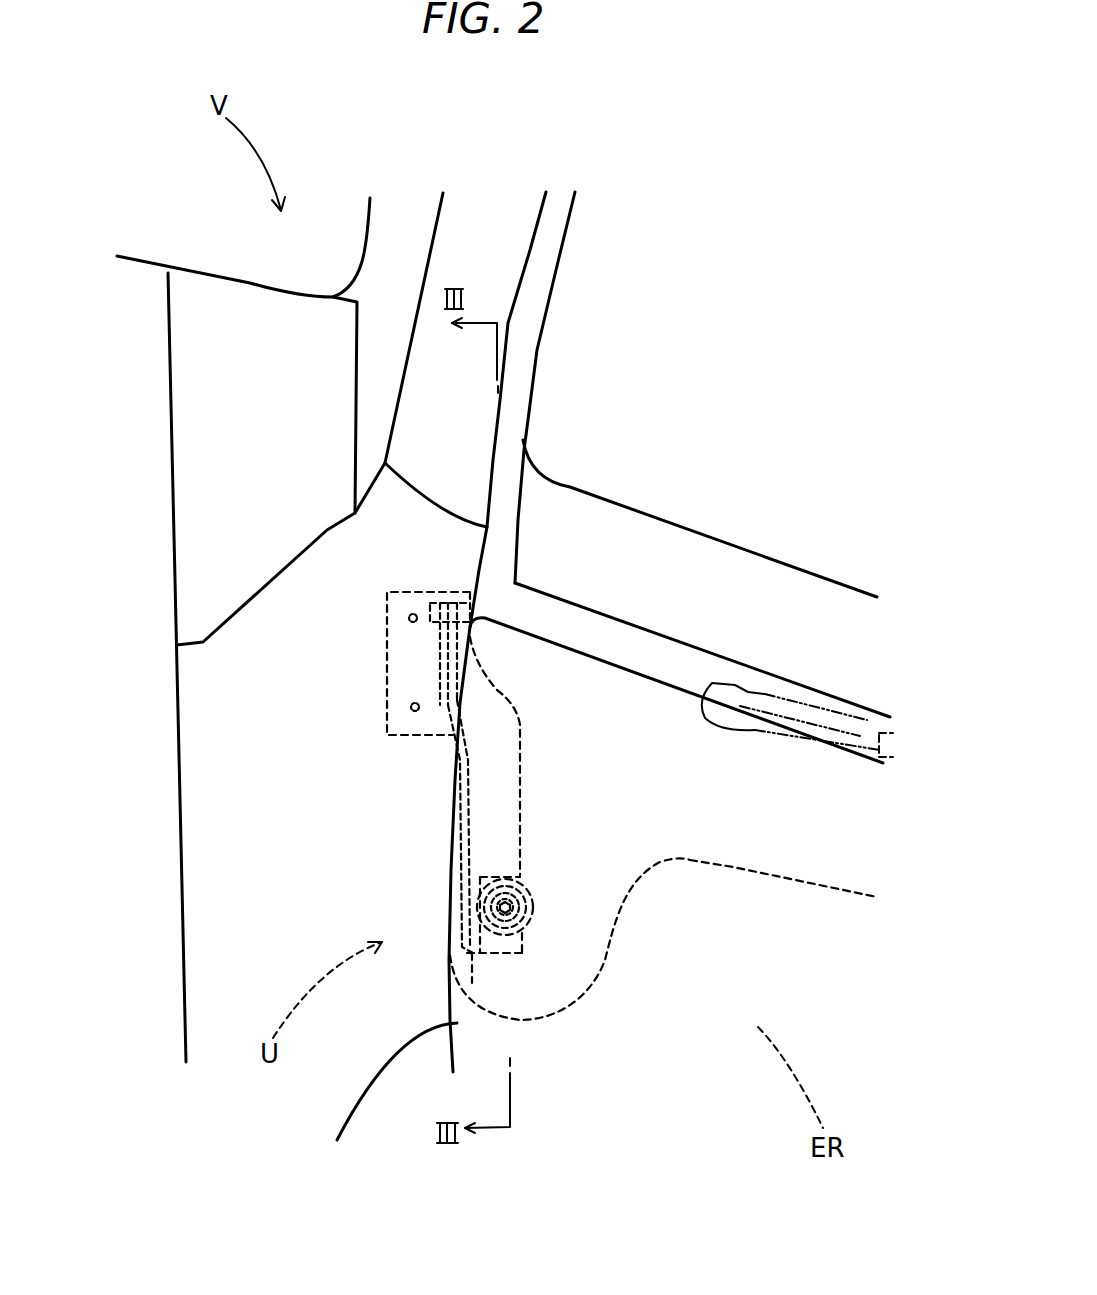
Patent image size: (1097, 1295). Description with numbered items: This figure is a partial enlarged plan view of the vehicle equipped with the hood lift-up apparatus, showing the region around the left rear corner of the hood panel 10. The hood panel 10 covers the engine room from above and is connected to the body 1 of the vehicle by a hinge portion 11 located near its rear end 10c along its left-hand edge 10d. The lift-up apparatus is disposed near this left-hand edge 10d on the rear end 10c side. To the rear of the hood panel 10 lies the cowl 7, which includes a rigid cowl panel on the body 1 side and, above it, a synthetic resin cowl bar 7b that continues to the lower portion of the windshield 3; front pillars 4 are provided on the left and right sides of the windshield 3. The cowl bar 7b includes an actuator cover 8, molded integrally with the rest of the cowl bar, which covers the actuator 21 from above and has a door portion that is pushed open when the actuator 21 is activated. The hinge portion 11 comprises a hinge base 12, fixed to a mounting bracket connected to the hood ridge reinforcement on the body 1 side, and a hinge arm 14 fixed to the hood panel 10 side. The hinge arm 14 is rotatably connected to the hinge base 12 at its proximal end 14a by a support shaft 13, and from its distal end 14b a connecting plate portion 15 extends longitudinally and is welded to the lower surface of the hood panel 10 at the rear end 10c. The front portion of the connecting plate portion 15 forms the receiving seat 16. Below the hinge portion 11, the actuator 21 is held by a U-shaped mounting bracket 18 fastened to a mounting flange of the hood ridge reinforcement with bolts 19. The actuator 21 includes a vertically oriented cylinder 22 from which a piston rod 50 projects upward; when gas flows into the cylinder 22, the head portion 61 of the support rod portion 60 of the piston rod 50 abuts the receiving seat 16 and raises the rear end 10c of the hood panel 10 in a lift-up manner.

The body 1 is at (207, 715).
The windshield 3 is at (685, 240).
The front pillar 4 is at (498, 220).
The cowl 7 is at (785, 936).
The cowl bar 7b is at (828, 870).
The actuator cover 8 is at (590, 968).
The hood panel 10 is at (792, 763).
The rear end 10c is at (853, 763).
The left-hand edge 10d is at (385, 1098).
The hinge portion 11 is at (525, 690).
The hinge base 12 is at (380, 597).
The support shaft 13 is at (470, 613).
The hinge arm 14 is at (513, 742).
The proximal end 14a is at (460, 590).
The distal end 14b is at (520, 793).
The connecting plate portion 15 is at (579, 1037).
The receiving seat 16 is at (517, 953).
The mounting bracket 18 is at (477, 862).
The bolt 19 is at (487, 877).
The actuator 21 is at (605, 905).
The cylinder 22 is at (537, 893).
The piston rod 50 is at (639, 921).
The support rod portion 60 is at (520, 907).
The head portion 61 is at (639, 921).